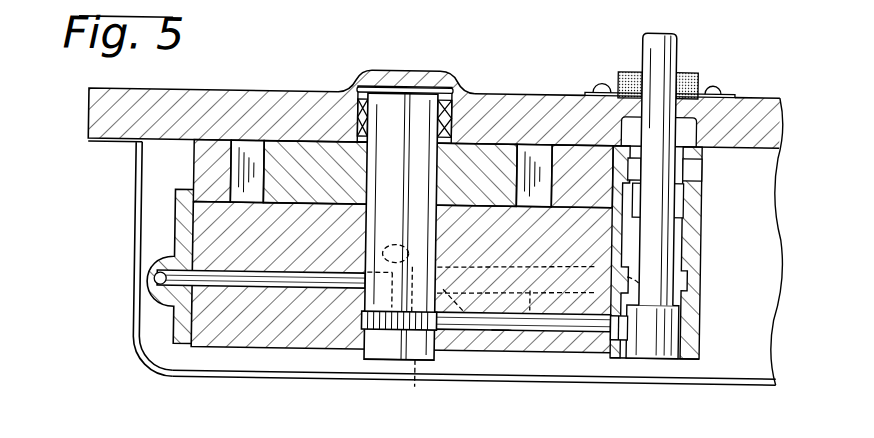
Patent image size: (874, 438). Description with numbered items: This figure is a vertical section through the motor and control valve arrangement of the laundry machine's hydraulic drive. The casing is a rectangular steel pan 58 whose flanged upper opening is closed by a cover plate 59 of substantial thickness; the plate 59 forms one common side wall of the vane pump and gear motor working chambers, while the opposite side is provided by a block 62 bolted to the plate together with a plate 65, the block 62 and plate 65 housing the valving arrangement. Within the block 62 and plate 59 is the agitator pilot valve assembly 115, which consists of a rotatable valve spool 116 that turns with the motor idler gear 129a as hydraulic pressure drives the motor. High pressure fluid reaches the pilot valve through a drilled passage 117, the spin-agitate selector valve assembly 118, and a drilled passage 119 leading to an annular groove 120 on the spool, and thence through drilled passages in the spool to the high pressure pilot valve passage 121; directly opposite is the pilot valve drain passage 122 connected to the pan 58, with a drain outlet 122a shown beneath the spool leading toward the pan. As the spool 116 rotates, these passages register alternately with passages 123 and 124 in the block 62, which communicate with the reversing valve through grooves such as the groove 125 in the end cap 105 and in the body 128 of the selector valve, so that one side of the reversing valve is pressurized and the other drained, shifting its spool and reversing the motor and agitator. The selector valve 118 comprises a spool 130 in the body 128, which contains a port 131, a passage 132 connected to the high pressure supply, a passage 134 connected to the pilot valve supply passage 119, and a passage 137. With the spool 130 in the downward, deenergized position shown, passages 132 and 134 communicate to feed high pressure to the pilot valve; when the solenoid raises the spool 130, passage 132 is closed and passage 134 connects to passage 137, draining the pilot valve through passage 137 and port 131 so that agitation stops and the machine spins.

The pan 58 is at (181, 379).
The cover plate 59 is at (100, 106).
The block 62 is at (261, 346).
The plate 65 is at (204, 160).
The end cap 105 is at (185, 222).
The agitator pilot valve assembly 115 is at (462, 41).
The rotatable valve spool 116 is at (381, 83).
The drilled passage 117 is at (512, 244).
The spin-agitate selector valve assembly 118 is at (710, 66).
The drilled passage 119 is at (504, 324).
The annular groove 120 is at (365, 313).
The high pressure pilot valve passage 121 is at (356, 263).
The pilot valve drain passage 122 is at (422, 335).
The passage outlet 122a is at (419, 382).
The passage 123 is at (229, 288).
The passage 124 is at (383, 303).
The groove 125 is at (157, 278).
The selector valve body 128 is at (695, 241).
The idler gear 129a is at (287, 143).
The spool 130 is at (664, 221).
The port 131 is at (622, 352).
The passage 132 is at (652, 332).
The passage 134 is at (612, 214).
The passage 137 is at (703, 164).